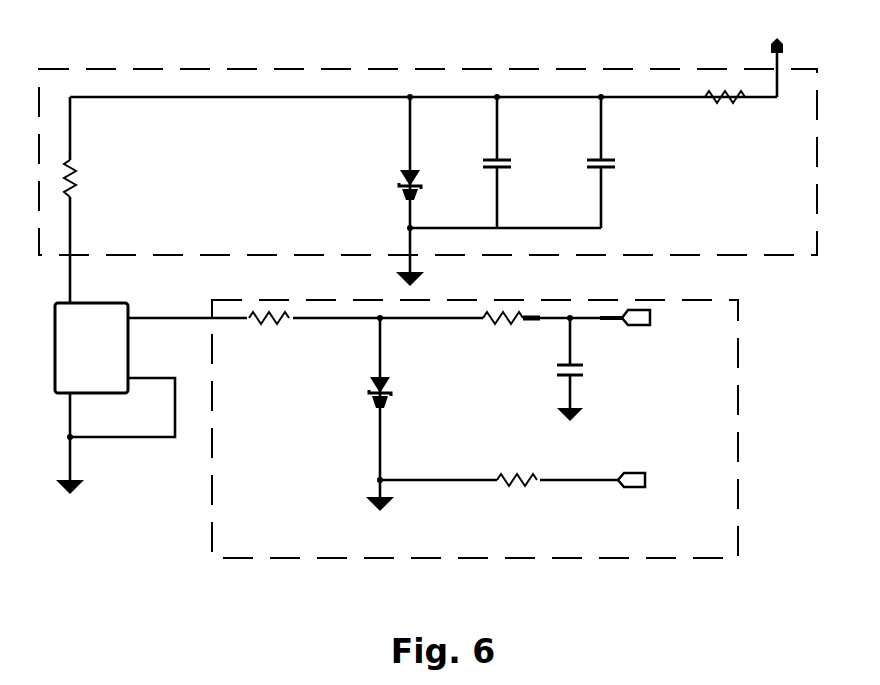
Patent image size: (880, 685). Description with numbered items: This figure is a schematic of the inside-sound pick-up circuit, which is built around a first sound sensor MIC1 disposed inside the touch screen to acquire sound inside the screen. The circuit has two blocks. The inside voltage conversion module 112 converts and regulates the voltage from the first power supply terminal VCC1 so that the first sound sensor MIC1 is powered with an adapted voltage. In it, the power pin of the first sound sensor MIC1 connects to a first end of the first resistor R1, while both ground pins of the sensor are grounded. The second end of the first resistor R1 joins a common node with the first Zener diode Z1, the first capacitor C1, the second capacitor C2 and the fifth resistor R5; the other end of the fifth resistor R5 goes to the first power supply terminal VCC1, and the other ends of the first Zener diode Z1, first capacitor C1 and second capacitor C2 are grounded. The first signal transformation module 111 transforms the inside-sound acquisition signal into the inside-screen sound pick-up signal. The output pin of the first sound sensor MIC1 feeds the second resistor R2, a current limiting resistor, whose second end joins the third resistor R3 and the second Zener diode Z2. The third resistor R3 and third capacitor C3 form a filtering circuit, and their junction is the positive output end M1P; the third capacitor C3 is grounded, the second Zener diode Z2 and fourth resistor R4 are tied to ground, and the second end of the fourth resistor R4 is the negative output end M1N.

The inside voltage conversion module 112 is at (392, 68).
The first signal transformation module 111 is at (739, 413).
The first resistor R1 is at (88, 178).
The second resistor R2 is at (269, 335).
The third resistor R3 is at (510, 335).
The fourth resistor R4 is at (517, 468).
The fifth resistor R5 is at (725, 115).
The first capacitor C1 is at (484, 177).
The second capacitor C2 is at (591, 181).
The third capacitor C3 is at (554, 376).
The first Zener diode Z1 is at (391, 185).
The second Zener diode Z2 is at (400, 401).
The first sound sensor MIC1 is at (96, 331).
The positive output end M1P is at (647, 322).
The negative output end M1N is at (657, 483).
The first power supply terminal VCC1 is at (772, 20).